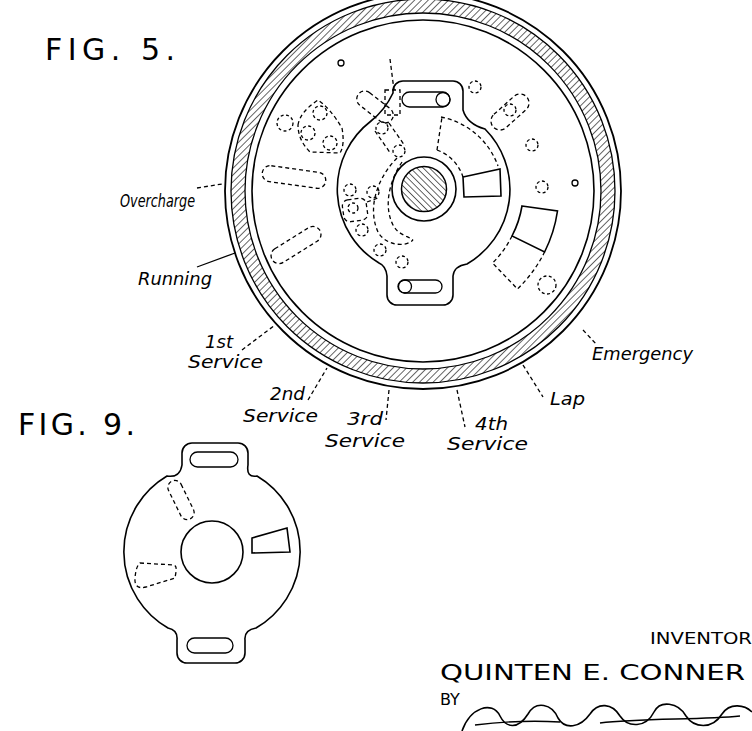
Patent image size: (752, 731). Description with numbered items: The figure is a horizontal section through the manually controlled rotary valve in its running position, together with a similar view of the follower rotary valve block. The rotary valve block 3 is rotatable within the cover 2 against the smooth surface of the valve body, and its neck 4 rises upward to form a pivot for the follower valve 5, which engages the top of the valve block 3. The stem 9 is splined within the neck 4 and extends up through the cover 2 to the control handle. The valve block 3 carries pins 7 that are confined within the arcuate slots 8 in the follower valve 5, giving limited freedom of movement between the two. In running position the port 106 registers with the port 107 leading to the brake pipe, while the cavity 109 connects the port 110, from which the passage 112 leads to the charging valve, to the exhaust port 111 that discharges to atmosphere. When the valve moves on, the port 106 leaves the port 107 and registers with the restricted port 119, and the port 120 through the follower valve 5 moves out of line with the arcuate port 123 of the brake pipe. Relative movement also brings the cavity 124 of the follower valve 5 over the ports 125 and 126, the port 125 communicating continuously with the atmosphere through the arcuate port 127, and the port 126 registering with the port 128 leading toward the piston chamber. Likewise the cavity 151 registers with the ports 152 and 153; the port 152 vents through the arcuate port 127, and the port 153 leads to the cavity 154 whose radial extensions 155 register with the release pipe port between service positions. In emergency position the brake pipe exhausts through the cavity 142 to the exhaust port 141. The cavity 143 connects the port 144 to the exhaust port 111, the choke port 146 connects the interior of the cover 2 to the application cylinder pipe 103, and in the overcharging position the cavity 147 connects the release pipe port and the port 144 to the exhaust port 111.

In FIG. 5, the cover 2 is at (603, 255).
In FIG. 5, the rotary valve block 3 is at (378, 348).
In FIG. 5, the neck 4 is at (431, 221).
In FIG. 5, the follower valve 5 is at (384, 265).
In FIG. 9, the follower valve 5 is at (273, 613).
In FIG. 5, the pins 7 is at (444, 93).
In FIG. 9, the pins 7 is at (220, 656).
In FIG. 5, the arcuate slots 8 is at (423, 93).
In FIG. 5, the stem 9 is at (440, 207).
In FIG. 5, the application cylinder pipe 103 is at (345, 63).
In FIG. 5, the port 106 is at (553, 214).
In FIG. 5, the port 107 is at (518, 287).
In FIG. 5, the cavity 109 is at (313, 120).
In FIG. 5, the port 110 is at (322, 105).
In FIG. 5, the exhaust port 111 is at (307, 141).
In FIG. 5, the passage 112 is at (336, 142).
In FIG. 5, the restricted port 119 is at (548, 179).
In FIG. 5, the port 120 is at (484, 197).
In FIG. 9, the port 120 is at (268, 554).
In FIG. 5, the arcuate port 123 is at (468, 120).
In FIG. 5, the cavity 124 is at (352, 226).
In FIG. 9, the cavity 124 is at (149, 560).
In FIG. 5, the port 125 is at (360, 178).
In FIG. 5, the port 126 is at (344, 204).
In FIG. 5, the arcuate port 127 is at (420, 259).
In FIG. 5, the port 128 is at (362, 238).
In FIG. 5, the exhaust port 141 is at (582, 297).
In FIG. 5, the cavity 142 is at (290, 252).
In FIG. 5, the cavity 143 is at (518, 110).
In FIG. 5, the port 144 is at (284, 132).
In FIG. 5, the choke port 146 is at (575, 180).
In FIG. 5, the cavity 147 is at (290, 180).
In FIG. 5, the cavity 151 is at (393, 152).
In FIG. 9, the cavity 151 is at (196, 495).
In FIG. 5, the port 152 is at (438, 152).
In FIG. 5, the port 153 is at (388, 107).
In FIG. 5, the cavity 154 is at (400, 66).
In FIG. 5, the radial extensions 155 is at (363, 100).